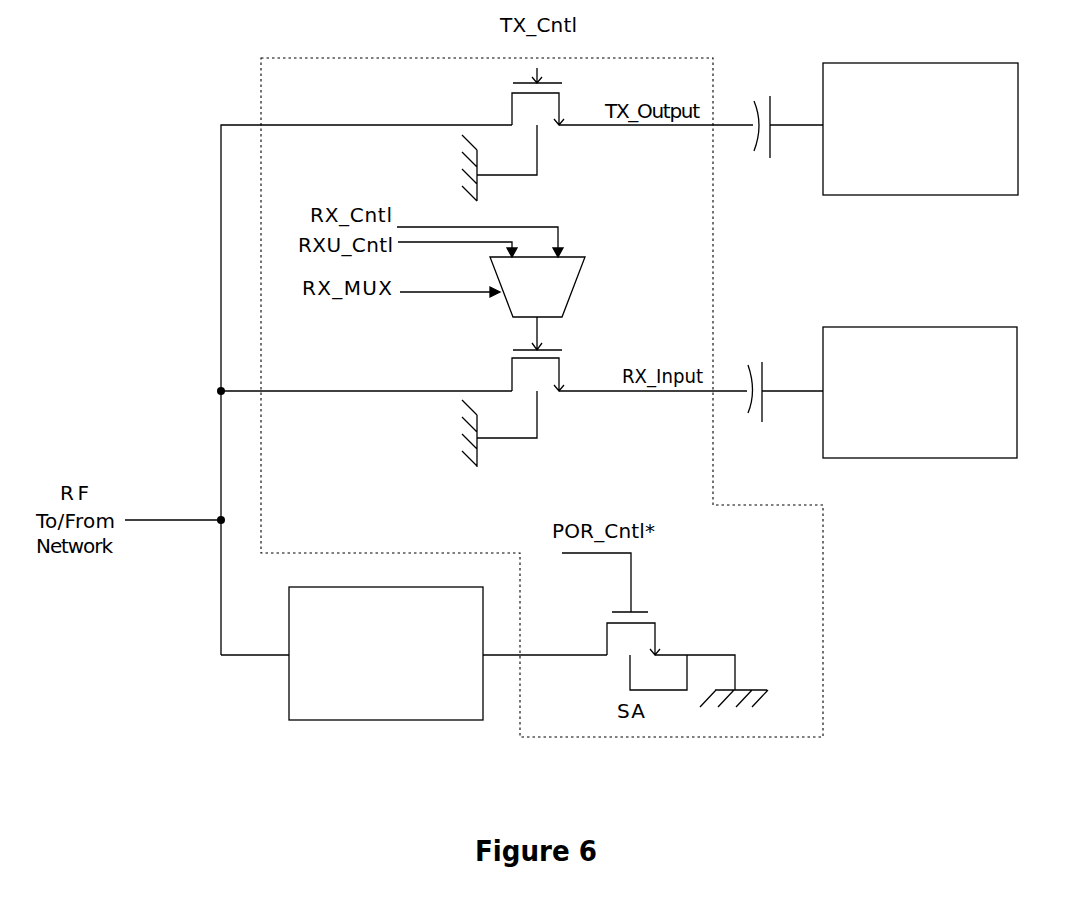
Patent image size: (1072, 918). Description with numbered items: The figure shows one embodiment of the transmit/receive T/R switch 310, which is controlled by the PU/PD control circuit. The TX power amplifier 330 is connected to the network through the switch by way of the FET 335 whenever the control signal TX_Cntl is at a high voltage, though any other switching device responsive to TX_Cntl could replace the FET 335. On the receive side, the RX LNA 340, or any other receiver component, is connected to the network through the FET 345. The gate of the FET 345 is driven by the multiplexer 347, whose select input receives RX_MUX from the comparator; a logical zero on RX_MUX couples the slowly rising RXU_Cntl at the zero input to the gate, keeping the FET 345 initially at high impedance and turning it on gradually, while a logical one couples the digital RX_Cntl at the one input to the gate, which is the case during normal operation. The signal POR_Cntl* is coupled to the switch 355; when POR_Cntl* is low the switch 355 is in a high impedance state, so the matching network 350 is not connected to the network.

The T/R switch 310 is at (718, 738).
The TX power amplifier 330 is at (957, 62).
The FET 335 is at (512, 107).
The RX LNA 340 is at (955, 326).
The FET 345 is at (510, 373).
The multiplexer 347 is at (570, 300).
The matching network 350 is at (405, 722).
The switch 355 is at (665, 628).